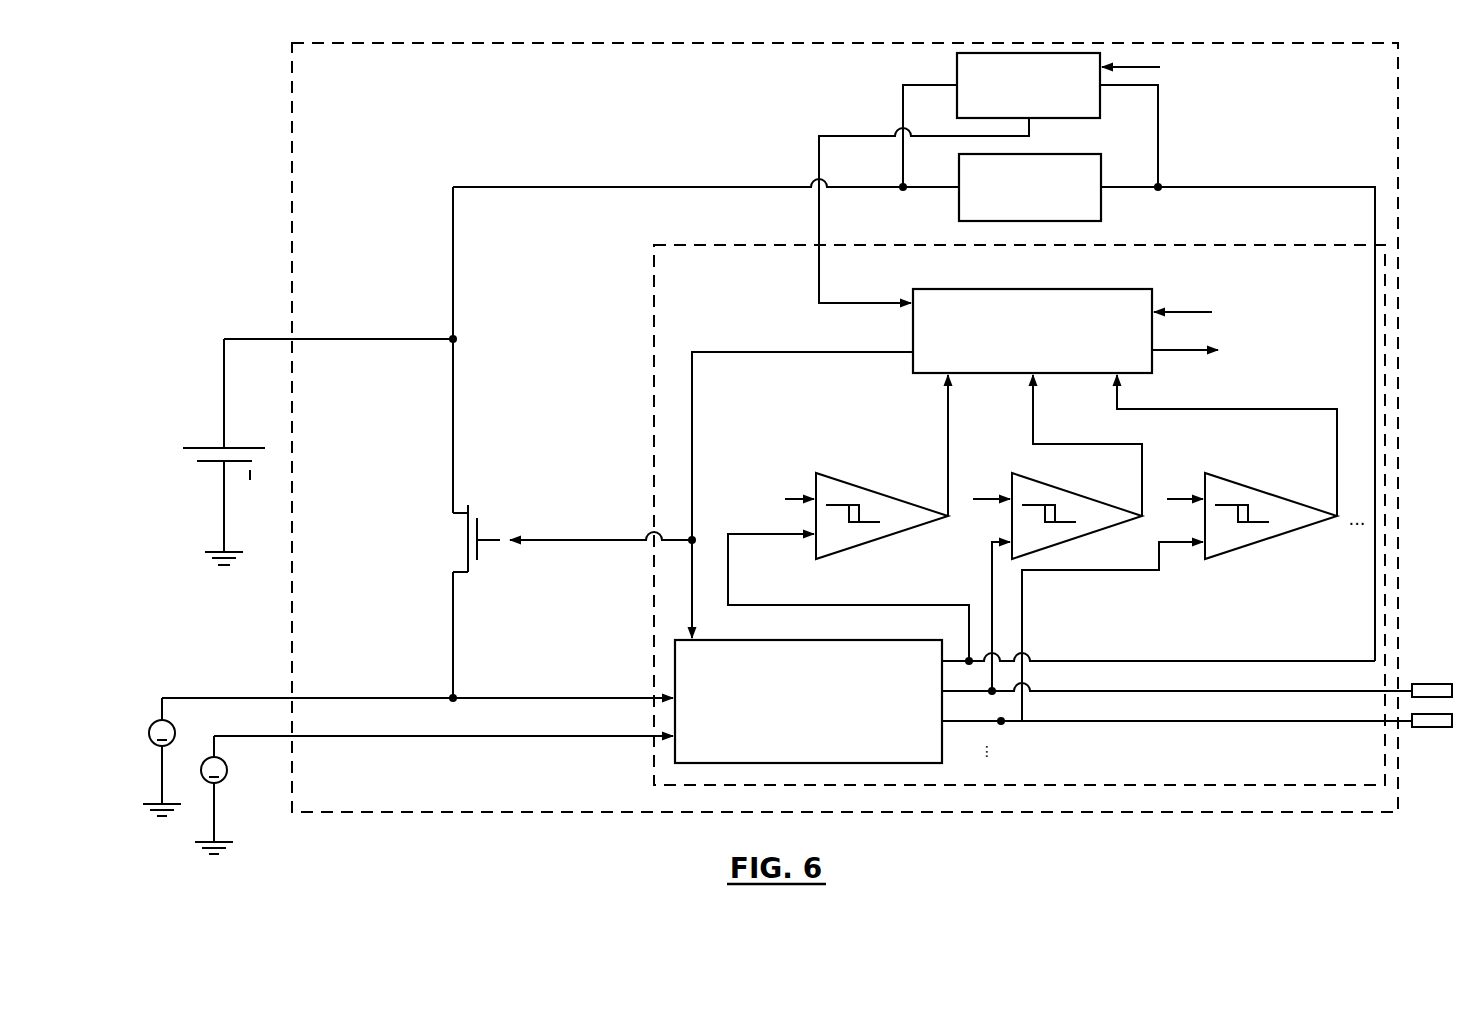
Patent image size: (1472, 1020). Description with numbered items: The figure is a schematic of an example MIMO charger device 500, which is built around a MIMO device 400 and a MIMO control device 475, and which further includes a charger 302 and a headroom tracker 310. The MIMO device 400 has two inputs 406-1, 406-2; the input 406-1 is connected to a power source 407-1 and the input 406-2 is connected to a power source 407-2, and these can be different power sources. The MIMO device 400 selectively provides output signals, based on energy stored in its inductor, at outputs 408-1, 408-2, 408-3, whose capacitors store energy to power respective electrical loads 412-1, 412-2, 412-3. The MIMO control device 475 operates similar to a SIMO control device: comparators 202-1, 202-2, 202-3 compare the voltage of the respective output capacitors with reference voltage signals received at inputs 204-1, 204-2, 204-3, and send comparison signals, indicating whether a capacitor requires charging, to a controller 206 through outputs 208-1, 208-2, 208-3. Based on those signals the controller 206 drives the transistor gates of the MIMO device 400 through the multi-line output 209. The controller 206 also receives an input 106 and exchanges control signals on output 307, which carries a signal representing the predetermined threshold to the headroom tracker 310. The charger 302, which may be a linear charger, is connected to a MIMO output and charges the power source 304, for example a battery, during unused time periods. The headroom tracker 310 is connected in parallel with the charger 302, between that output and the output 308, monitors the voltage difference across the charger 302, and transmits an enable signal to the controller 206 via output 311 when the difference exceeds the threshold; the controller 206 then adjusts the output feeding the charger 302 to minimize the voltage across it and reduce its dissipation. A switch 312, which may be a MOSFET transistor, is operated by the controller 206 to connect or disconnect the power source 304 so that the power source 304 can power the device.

The MIMO charger device 500 is at (286, 140).
The MIMO control device 475 is at (650, 355).
The headroom tracker 310 is at (957, 72).
The charger 302 is at (1101, 207).
The electrical load 412-1 is at (1058, 154).
The output 311 is at (819, 136).
The output 308 is at (618, 187).
The output 307 is at (1160, 67).
The controller 206 is at (1030, 289).
The input 106 is at (1188, 312).
The output 209 is at (735, 352).
The output 208-1 is at (948, 430).
The output 208-2 is at (1142, 444).
The output 208-3 is at (1270, 409).
The comparator 202-1 is at (845, 483).
The comparator 202-2 is at (1045, 485).
The comparator 202-3 is at (1250, 486).
The input 204-1 is at (800, 499).
The input 204-2 is at (973, 499).
The input 204-3 is at (1167, 499).
The MIMO device 400 is at (668, 766).
The output 408-1 is at (1047, 661).
The output 408-2 is at (1048, 691).
The output 408-3 is at (1065, 721).
The electrical load 412-2 is at (1412, 684).
The electrical load 412-3 is at (1412, 729).
The power source 304 is at (200, 448).
The switch 312 is at (463, 552).
The input 406-1 is at (430, 736).
The input 406-2 is at (420, 698).
The power source 407-1 is at (225, 778).
The power source 407-2 is at (160, 718).